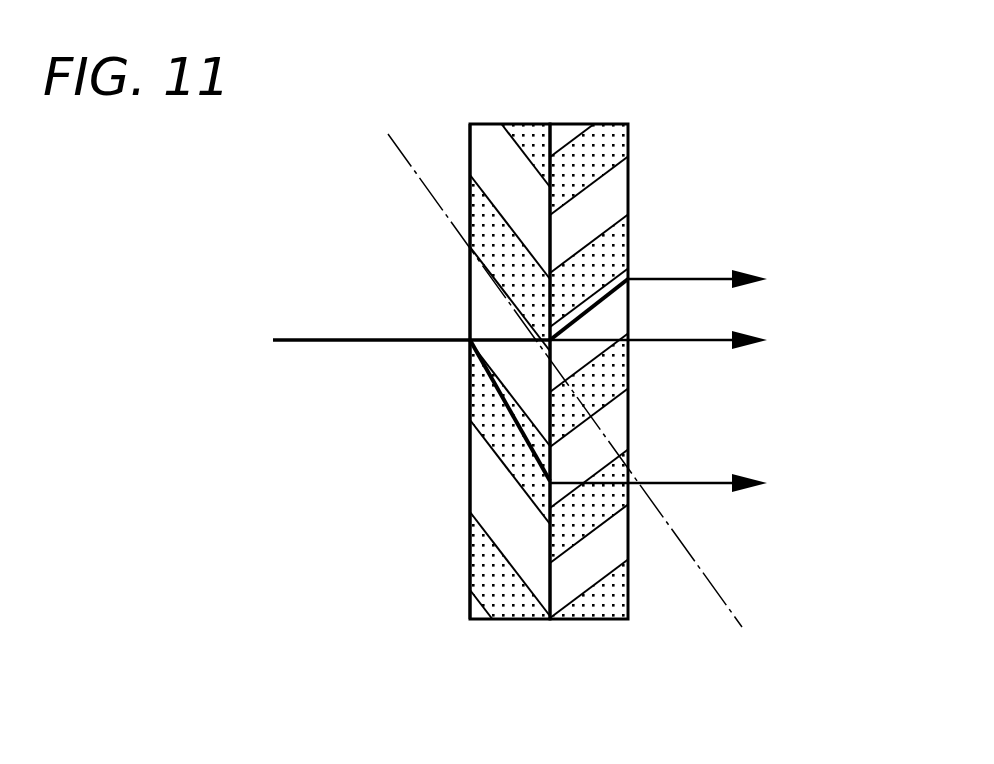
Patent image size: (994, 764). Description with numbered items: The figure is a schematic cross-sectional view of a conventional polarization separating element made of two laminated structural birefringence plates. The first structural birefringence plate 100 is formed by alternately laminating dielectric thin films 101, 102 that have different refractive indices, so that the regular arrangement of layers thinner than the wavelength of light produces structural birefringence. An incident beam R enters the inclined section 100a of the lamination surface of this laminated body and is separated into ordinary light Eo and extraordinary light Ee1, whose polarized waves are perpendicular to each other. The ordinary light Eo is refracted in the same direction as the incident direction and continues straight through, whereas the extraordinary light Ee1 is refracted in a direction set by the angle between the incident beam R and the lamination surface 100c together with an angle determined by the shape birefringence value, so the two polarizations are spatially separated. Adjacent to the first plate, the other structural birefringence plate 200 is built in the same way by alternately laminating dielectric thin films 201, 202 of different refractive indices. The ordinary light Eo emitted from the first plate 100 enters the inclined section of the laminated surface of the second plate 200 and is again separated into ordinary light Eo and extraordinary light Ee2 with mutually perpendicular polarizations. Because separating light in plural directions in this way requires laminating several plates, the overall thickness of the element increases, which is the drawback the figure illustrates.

The structural birefringence plate 100 is at (461, 380).
The inclined section of the lamination surface 100a is at (470, 480).
The lamination surface 100c is at (405, 160).
The dielectric thin film 101 is at (490, 140).
The dielectric thin film 102 is at (487, 235).
The structural birefringence plate 200 is at (646, 419).
The dielectric thin film 201 is at (610, 197).
The dielectric thin film 202 is at (620, 240).
The incident beam R is at (396, 343).
The ordinary light Eo is at (687, 341).
The extraordinary light Ee1 is at (693, 483).
The extraordinary light Ee2 is at (733, 281).